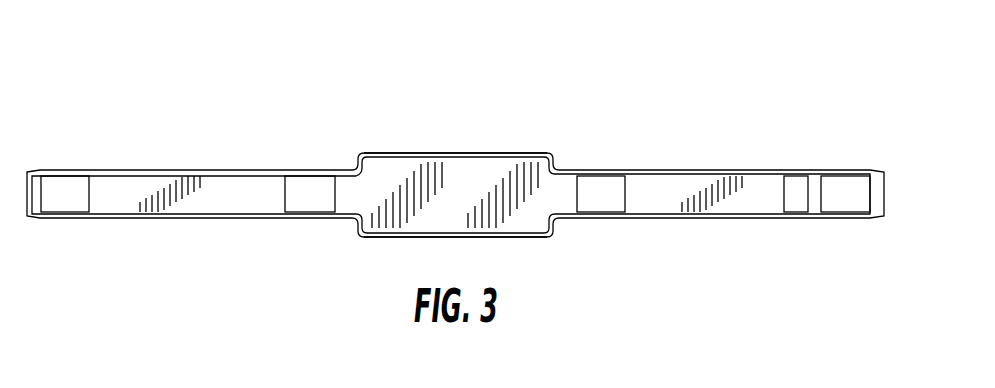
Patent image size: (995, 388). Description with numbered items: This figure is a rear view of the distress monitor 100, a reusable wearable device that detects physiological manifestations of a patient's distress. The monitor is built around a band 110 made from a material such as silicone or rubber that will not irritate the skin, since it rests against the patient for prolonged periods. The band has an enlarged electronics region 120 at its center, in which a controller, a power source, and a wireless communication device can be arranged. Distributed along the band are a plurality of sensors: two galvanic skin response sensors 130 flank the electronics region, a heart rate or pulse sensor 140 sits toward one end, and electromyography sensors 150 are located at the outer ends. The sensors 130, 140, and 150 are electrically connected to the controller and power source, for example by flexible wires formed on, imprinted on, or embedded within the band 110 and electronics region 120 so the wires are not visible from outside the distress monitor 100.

The distress monitor 100 is at (622, 104).
The band 110 is at (688, 170).
The electronics region 120 is at (482, 153).
The galvanic skin response sensors 130 is at (303, 200).
The heart rate sensor 140 is at (796, 200).
The electromyography sensors 150 is at (70, 199).